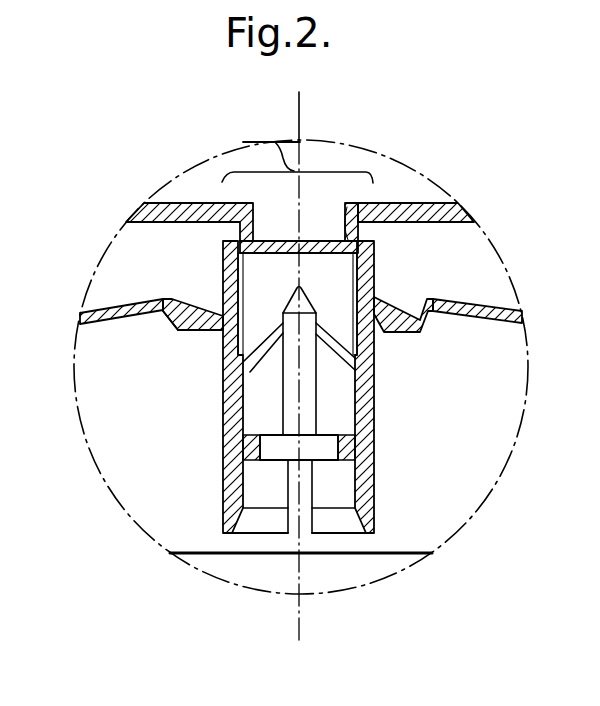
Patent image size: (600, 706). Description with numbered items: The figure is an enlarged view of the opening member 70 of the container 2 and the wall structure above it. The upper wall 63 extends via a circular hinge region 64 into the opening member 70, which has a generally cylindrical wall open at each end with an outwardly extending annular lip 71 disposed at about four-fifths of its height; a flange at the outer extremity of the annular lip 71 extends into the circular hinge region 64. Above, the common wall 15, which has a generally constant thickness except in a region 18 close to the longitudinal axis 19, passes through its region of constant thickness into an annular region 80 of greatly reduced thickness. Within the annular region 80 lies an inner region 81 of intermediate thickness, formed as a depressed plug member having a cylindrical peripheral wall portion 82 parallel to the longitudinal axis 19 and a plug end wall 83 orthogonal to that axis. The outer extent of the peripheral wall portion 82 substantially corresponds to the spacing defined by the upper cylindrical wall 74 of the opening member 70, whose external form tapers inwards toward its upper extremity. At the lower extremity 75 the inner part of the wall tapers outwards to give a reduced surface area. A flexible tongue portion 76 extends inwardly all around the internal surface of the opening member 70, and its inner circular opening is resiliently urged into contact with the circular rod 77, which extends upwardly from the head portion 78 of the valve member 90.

The container 2 is at (168, 324).
The common wall 15 is at (416, 199).
The region close to the longitudinal axis 18 is at (243, 145).
The longitudinal axis 19 is at (299, 92).
The upper wall 63 is at (115, 304).
The circular hinge region 64 is at (163, 298).
The opening member 70 is at (236, 400).
The annular lip 71 is at (187, 332).
The upper cylindrical wall 74 is at (376, 288).
The lower extremity 75 is at (376, 500).
The tongue portion 76 is at (336, 353).
The circular rod 77 is at (308, 385).
The head portion 78 is at (340, 450).
The annular region 80 is at (240, 205).
The inner region 81 is at (314, 241).
The cylindrical peripheral wall portion 82 is at (358, 226).
The plug end wall 83 is at (427, 322).
The valve member 90 is at (284, 452).